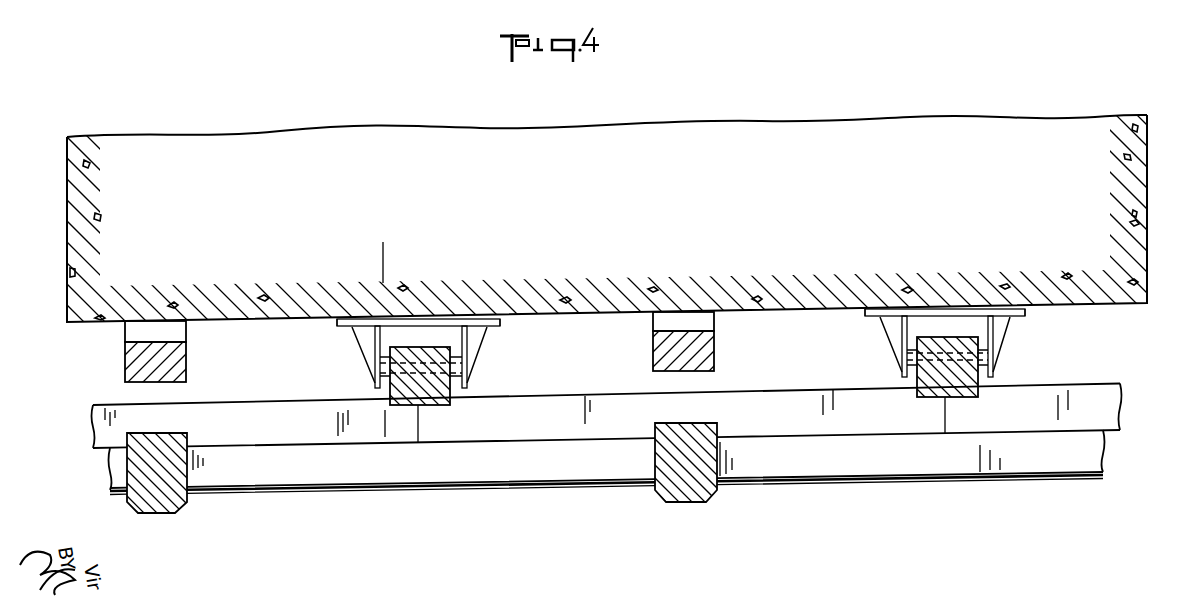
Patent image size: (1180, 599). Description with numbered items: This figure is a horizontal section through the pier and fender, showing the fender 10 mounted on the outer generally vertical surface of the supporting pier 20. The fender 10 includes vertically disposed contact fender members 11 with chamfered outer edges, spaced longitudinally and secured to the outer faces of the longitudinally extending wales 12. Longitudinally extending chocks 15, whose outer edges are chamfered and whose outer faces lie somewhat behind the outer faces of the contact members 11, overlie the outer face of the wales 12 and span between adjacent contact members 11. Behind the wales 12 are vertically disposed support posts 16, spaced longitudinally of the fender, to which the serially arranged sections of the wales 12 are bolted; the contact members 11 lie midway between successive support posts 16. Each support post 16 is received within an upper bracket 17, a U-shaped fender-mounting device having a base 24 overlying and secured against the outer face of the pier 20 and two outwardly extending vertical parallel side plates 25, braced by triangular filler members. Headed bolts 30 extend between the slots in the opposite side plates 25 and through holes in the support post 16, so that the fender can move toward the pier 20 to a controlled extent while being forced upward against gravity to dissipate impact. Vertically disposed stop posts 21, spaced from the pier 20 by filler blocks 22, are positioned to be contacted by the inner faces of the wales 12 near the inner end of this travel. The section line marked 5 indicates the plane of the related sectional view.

The pier 20 is at (386, 158).
The base 24 is at (403, 316).
The side plates 25 is at (338, 326).
The upper bracket 17 is at (352, 348).
The support post 16 is at (443, 401).
The headed bolt 30 is at (391, 388).
The wale 12 is at (257, 408).
The fender 10 is at (411, 462).
The chock 15 is at (315, 478).
The filler block 22 is at (140, 332).
The stop post 21 is at (183, 359).
The contact fender member 11 is at (155, 497).
The section line 5- 5 is at (405, 248).